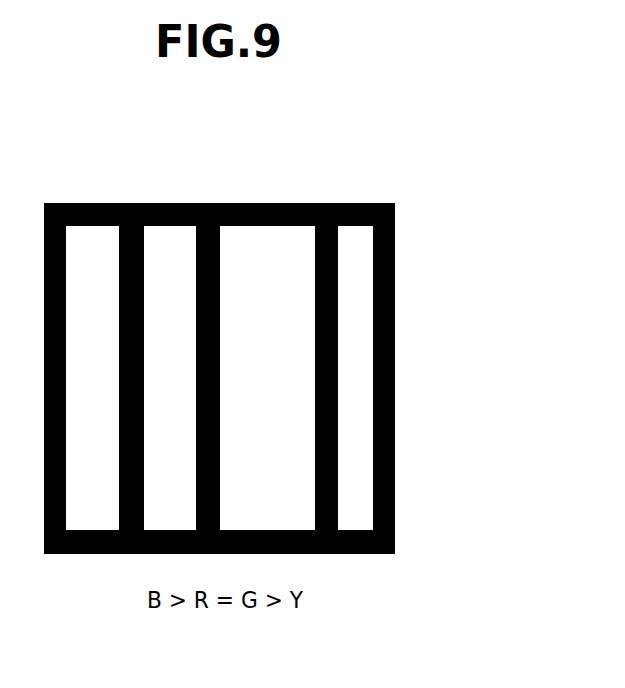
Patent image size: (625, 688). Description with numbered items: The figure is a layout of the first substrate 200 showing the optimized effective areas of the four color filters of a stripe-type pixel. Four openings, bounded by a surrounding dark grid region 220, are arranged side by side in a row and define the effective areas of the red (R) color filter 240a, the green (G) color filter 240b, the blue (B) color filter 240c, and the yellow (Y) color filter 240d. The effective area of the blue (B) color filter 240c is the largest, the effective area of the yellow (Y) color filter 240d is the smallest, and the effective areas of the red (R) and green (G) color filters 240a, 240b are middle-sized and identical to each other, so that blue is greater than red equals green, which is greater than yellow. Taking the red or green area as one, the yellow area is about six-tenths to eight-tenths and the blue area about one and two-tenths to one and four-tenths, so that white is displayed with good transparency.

The first substrate 200 is at (258, 332).
The black matrix 220 is at (398, 265).
The red (R) color filter 240a is at (92, 237).
The green (G) color filter 240b is at (168, 237).
The blue (B) color filter 240c is at (267, 237).
The yellow (Y) color filter 240d is at (354, 237).